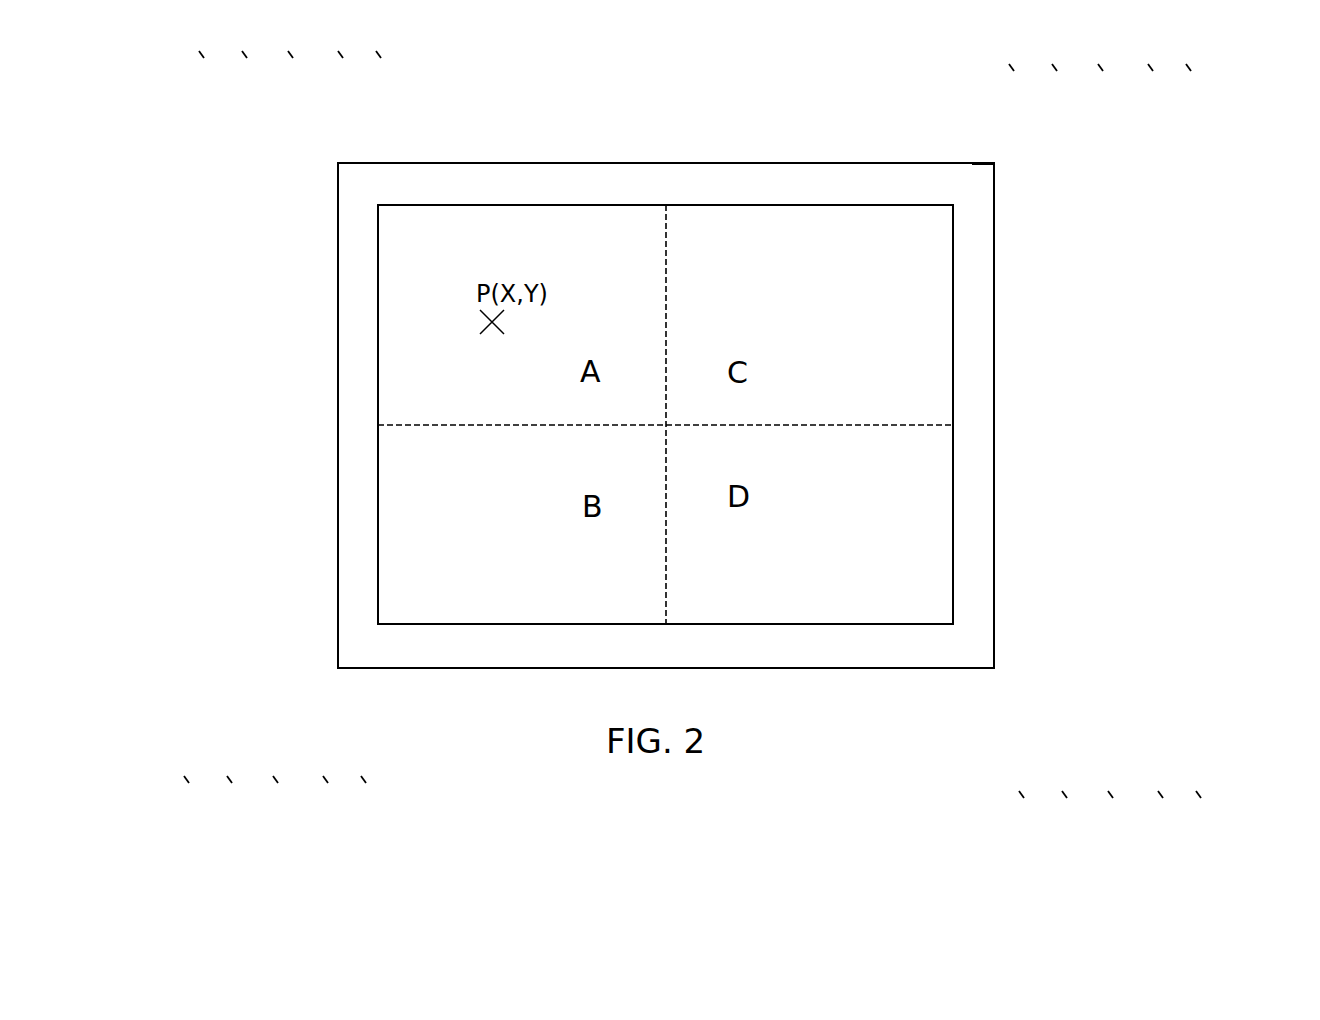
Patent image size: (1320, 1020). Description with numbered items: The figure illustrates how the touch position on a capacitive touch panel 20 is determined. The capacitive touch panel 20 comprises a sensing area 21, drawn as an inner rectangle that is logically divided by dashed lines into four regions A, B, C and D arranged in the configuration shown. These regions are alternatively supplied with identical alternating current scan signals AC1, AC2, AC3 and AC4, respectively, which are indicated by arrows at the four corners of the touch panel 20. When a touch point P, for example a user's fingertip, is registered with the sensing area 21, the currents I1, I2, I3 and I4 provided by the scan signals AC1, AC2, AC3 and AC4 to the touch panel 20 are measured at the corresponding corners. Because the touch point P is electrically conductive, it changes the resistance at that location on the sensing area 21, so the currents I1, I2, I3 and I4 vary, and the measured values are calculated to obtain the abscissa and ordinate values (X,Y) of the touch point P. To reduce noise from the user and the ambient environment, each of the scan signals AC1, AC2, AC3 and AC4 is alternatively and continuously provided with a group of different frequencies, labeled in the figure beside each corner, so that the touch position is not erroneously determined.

The capacitive touch panel 20 is at (682, 116).
The sensing area 21 is at (940, 417).
The alternating current scan signal AC1 is at (338, 163).
The alternating current scan signal AC2 is at (337, 667).
The alternating current scan signal AC3 is at (994, 668).
The alternating current scan signal AC4 is at (994, 164).
The current I1 is at (325, 174).
The current I2 is at (325, 654).
The current I3 is at (1017, 671).
The current I4 is at (1017, 165).